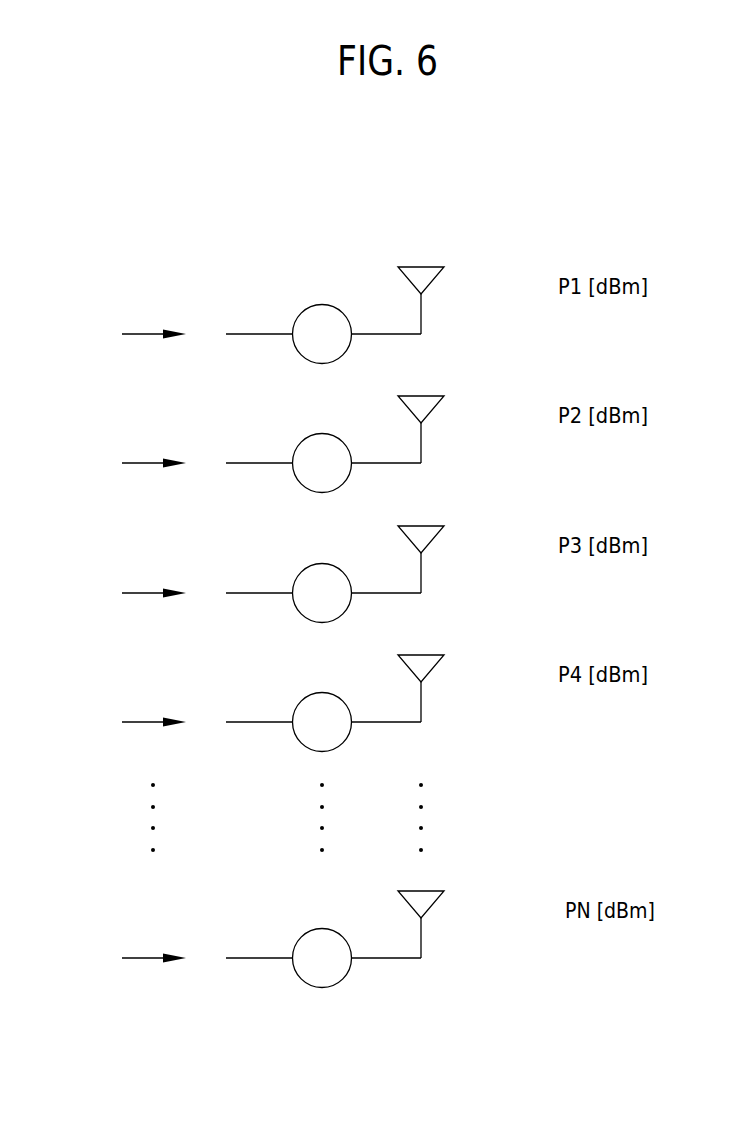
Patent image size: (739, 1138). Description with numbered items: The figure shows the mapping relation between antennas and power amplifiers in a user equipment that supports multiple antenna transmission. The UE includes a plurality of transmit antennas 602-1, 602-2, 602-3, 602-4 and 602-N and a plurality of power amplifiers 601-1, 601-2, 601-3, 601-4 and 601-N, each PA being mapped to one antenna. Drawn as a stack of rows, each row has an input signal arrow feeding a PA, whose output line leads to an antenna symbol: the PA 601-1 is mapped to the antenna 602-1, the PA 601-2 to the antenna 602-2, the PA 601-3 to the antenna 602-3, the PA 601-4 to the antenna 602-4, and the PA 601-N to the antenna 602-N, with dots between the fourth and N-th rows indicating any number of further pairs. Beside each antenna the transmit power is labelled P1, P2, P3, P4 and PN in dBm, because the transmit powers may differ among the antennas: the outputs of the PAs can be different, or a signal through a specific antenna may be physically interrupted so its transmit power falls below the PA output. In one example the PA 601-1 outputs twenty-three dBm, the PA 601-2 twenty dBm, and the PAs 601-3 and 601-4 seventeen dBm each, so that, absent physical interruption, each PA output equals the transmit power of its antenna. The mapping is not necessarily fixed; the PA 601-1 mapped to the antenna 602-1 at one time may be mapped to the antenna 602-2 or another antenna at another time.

The power amplifier 601-1 is at (301, 314).
The transmit antenna 602-1 is at (435, 280).
The power amplifier 601-2 is at (301, 443).
The transmit antenna 602-2 is at (435, 409).
The power amplifier 601-3 is at (301, 573).
The transmit antenna 602-3 is at (435, 539).
The power amplifier 601-4 is at (301, 702).
The transmit antenna 602-4 is at (435, 668).
The power amplifier 601-N is at (301, 938).
The transmit antenna 602-N is at (435, 904).